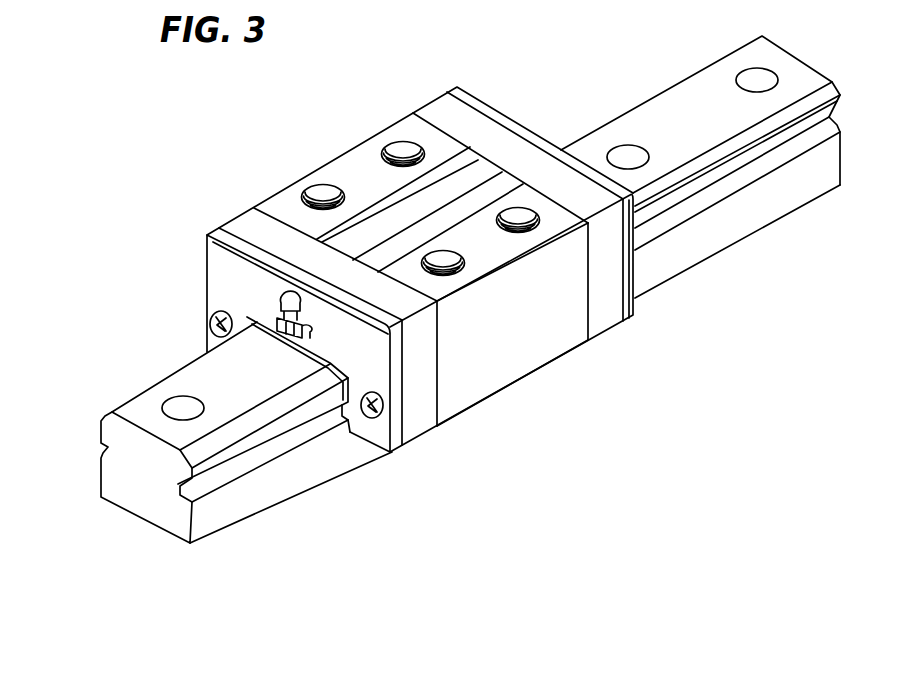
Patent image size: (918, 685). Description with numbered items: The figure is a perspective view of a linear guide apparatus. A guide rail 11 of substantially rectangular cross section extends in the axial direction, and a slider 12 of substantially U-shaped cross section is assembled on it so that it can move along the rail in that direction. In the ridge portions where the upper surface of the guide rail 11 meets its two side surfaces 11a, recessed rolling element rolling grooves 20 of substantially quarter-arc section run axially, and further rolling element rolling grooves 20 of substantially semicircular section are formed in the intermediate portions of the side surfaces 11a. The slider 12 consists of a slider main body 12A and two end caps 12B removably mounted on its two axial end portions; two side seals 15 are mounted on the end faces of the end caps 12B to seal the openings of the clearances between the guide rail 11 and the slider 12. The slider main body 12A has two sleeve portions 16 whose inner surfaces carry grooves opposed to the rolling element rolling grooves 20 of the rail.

The guide rail 11 is at (163, 376).
The side surface 11a is at (98, 470).
The slider 12 is at (305, 160).
The slider main body 12A is at (366, 160).
The end cap 12B is at (445, 112).
The side seal 15 is at (478, 105).
The sleeve portion 16 is at (525, 327).
The rolling element rolling groove 20 is at (110, 411).